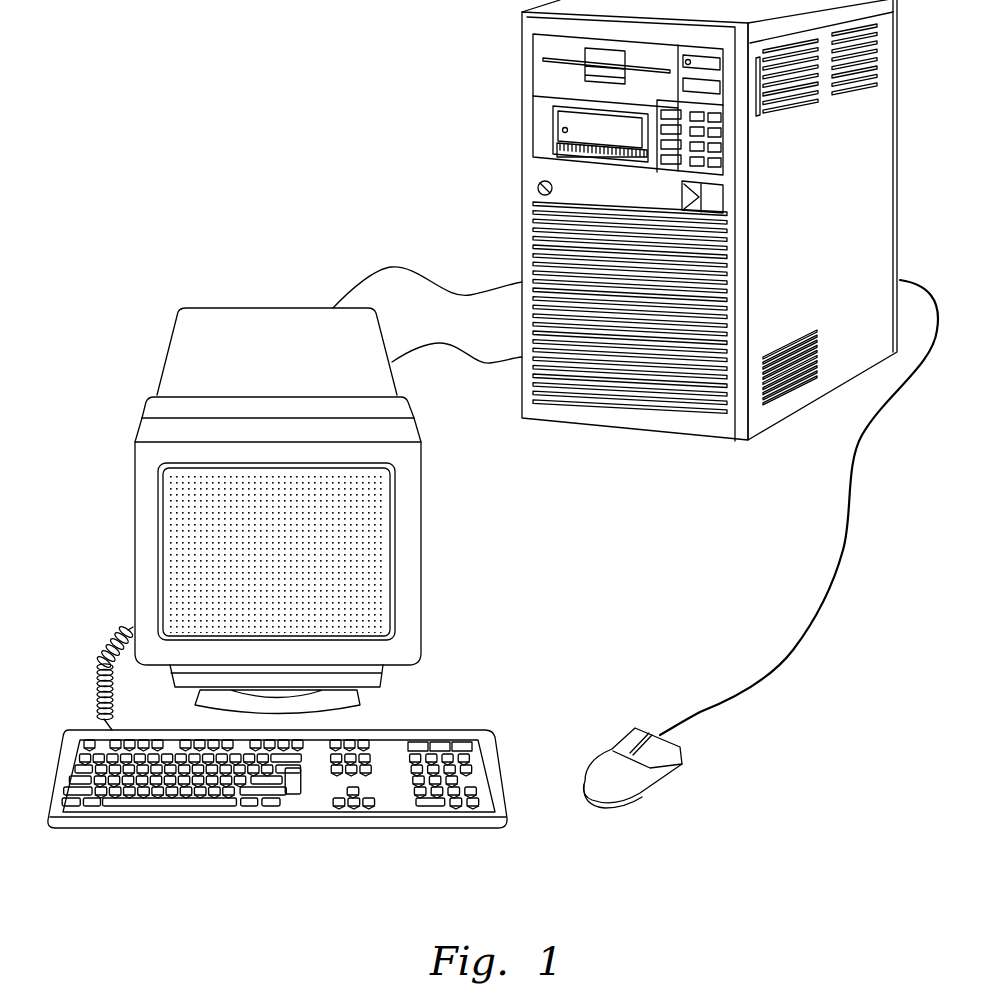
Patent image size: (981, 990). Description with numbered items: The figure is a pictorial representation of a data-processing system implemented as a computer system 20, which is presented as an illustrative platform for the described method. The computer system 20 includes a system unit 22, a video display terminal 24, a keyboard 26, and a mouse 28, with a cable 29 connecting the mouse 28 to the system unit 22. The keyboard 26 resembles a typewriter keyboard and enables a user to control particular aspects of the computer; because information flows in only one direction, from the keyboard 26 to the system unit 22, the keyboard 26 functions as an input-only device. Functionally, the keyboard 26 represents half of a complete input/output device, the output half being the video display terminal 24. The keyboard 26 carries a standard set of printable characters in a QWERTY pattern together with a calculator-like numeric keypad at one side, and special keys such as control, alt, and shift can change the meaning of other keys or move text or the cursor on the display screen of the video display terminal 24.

The computer system 20 is at (313, 184).
The system unit 22 is at (540, 168).
The video display terminal 24 is at (292, 330).
The keyboard 26 is at (311, 820).
The mouse 28 is at (640, 790).
The cable 29 is at (793, 652).